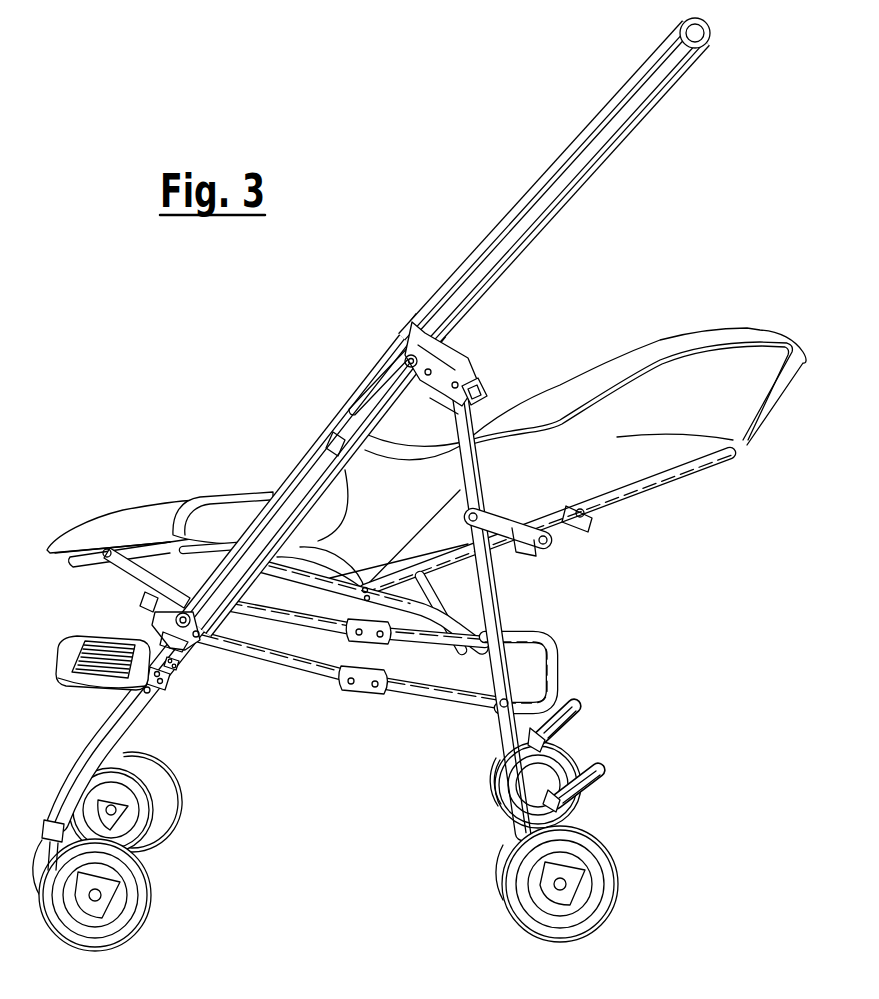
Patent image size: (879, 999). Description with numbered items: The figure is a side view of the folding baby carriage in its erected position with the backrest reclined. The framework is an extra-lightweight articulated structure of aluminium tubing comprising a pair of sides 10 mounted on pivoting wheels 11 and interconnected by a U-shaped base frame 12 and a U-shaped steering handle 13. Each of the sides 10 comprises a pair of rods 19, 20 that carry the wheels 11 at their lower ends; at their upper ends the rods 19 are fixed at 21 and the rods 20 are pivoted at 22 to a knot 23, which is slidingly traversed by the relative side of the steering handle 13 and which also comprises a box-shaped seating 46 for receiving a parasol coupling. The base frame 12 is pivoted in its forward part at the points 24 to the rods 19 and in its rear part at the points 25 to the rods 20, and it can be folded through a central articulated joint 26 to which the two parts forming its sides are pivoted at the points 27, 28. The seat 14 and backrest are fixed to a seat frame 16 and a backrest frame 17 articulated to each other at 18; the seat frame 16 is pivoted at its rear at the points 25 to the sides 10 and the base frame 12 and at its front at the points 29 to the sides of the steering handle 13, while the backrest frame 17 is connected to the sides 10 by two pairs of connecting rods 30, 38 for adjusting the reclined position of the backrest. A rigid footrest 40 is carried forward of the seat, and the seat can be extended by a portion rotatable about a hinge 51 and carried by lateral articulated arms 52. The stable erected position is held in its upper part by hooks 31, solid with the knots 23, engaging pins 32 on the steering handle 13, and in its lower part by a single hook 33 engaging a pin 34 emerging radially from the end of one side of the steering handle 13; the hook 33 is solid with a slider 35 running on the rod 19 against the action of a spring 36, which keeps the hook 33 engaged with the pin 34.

The sides 10 is at (504, 598).
The pivoting wheels 11 is at (175, 795).
The base frame 12 is at (261, 693).
The steering handle 13 is at (568, 200).
The seat 14 is at (218, 510).
The seat frame 16 is at (327, 592).
The backrest frame 17 is at (658, 492).
The articulation 18 is at (366, 585).
The rods 19 is at (87, 758).
The rods 20 is at (470, 488).
The fixing point 21 is at (431, 369).
The pivot point 22 is at (458, 382).
The knot 23 is at (438, 403).
The pivot points 24 is at (199, 638).
The pivot points 25 is at (500, 707).
The central articulated joint 26 is at (375, 640).
The pivot point 27 is at (348, 686).
The pivot point 28 is at (377, 690).
The pivot points 29 is at (234, 560).
The connecting rods 30 is at (502, 524).
The hooks 31 is at (420, 337).
The pins 32 is at (404, 359).
The hook 33 is at (166, 621).
The pin 34 is at (182, 612).
The slider 35 is at (170, 637).
The spring 36 is at (178, 668).
The connecting rods 38 is at (573, 524).
The footrest 40 is at (90, 650).
The box-shaped seatings 46 is at (492, 404).
The hinge 51 is at (150, 545).
The lateral articulated arms 52 is at (120, 572).